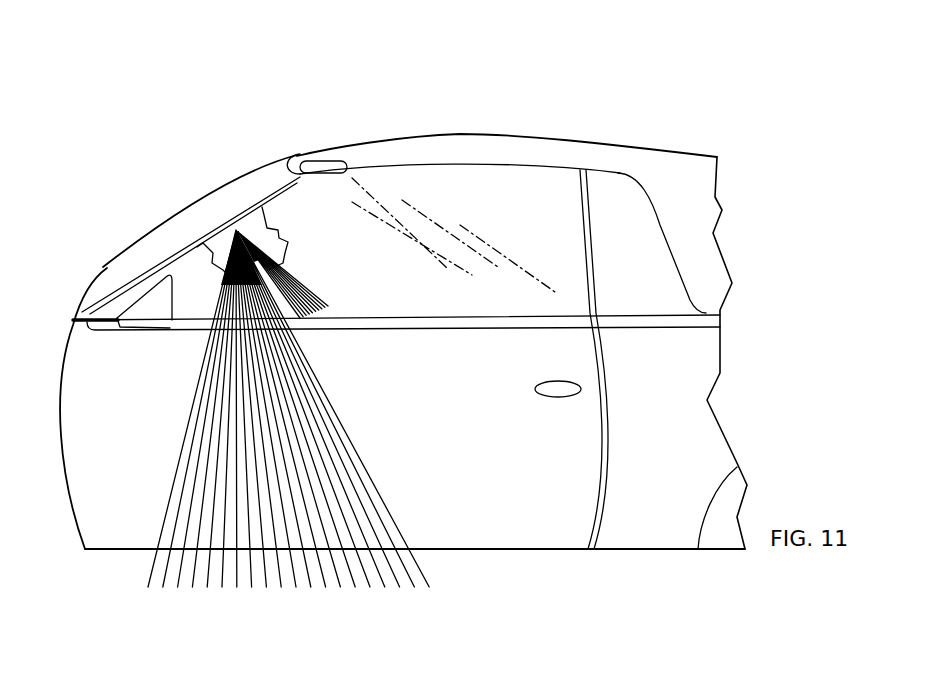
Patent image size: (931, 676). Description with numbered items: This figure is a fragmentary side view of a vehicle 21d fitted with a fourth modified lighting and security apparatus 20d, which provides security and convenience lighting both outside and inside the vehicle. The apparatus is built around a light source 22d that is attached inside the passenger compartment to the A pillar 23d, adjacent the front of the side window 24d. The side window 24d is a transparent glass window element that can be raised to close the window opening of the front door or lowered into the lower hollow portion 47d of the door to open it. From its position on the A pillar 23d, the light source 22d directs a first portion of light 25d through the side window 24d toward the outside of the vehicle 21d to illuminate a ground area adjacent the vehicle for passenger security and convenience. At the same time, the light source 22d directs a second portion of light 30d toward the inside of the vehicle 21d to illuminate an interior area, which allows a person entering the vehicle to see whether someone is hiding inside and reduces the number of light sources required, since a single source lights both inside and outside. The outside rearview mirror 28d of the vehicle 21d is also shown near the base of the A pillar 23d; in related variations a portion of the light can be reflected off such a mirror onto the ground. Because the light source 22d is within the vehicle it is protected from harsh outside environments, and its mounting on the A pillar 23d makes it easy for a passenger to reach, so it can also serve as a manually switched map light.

The vehicle 21d is at (444, 90).
The lighting and security apparatus 20d is at (233, 176).
The A pillar 23d is at (208, 224).
The outside rearview mirror 28d is at (132, 302).
The light source 22d is at (243, 228).
The first portion of light 25d is at (212, 435).
The second portion of light 30d is at (296, 275).
The side window 24d is at (552, 227).
The lower hollow portion 47d is at (500, 407).